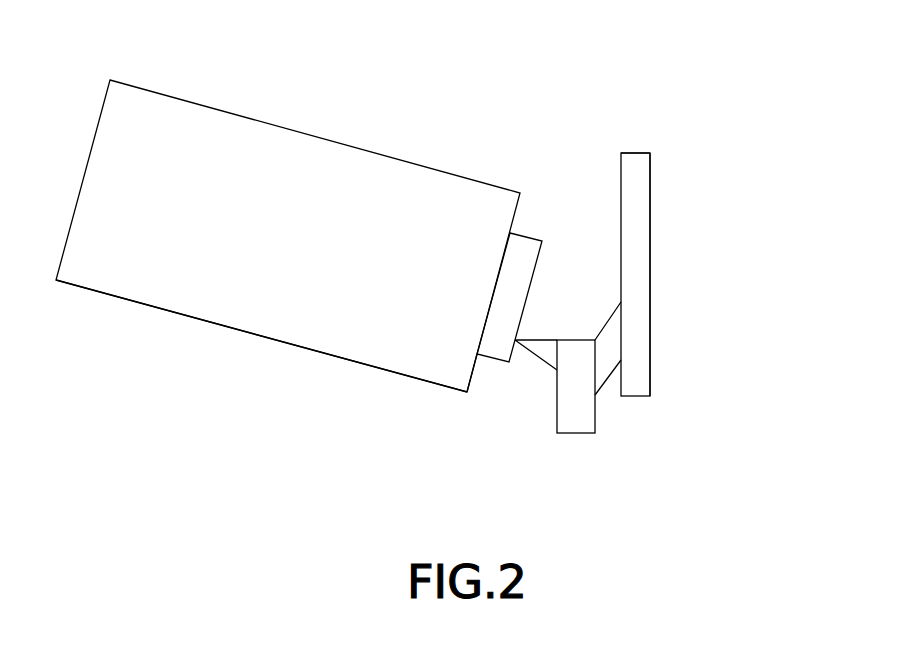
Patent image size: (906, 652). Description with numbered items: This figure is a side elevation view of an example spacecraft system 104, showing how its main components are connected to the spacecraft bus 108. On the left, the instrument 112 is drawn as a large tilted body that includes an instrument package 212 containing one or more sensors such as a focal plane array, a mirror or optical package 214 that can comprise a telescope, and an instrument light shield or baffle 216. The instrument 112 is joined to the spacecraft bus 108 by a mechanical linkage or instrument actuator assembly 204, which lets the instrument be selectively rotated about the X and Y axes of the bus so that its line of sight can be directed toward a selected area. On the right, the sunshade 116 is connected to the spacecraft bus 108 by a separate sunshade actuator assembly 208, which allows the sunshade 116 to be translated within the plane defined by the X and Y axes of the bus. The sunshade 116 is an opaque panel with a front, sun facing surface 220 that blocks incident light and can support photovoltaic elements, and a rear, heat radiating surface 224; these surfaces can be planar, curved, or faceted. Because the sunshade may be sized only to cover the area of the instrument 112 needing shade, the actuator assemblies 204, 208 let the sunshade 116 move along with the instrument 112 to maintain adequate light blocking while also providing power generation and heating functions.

The spacecraft system 104 is at (506, 87).
The instrument 112 is at (387, 152).
The instrument package 212 is at (523, 234).
The instrument light shield or baffle 216 is at (278, 340).
The mirror or optical package 214 is at (470, 378).
The instrument actuator assembly 204 is at (543, 360).
The spacecraft bus 108 is at (577, 433).
The sunshade actuator assembly 208 is at (608, 375).
The sunshade 116 is at (637, 236).
The sun facing surface 220 is at (650, 342).
The heat radiating surface 224 is at (637, 153).